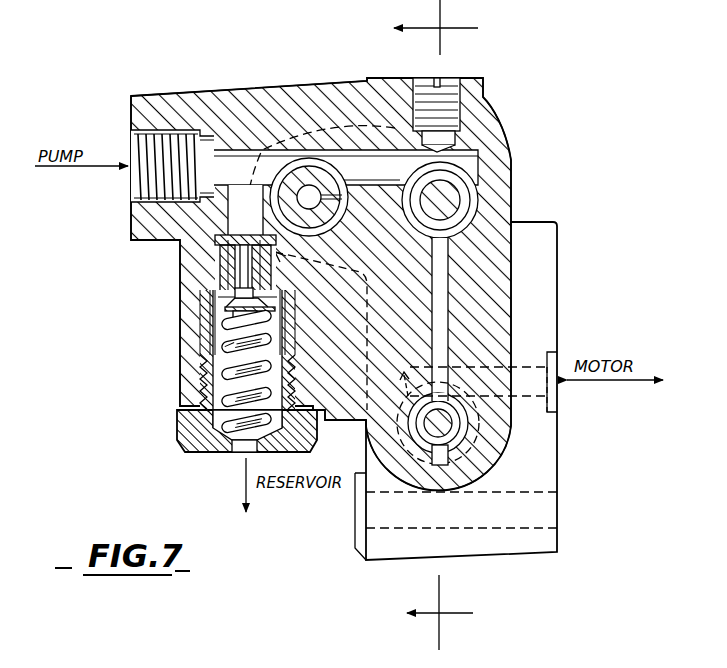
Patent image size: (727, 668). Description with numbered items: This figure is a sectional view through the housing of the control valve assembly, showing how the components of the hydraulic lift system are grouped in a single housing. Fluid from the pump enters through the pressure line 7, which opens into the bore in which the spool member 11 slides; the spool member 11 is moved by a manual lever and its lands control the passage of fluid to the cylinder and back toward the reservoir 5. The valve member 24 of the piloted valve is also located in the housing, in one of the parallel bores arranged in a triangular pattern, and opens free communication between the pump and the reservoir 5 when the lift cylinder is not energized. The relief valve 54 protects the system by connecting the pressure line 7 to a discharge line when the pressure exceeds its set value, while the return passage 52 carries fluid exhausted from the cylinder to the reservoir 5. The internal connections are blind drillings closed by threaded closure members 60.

The pressure line 7 is at (362, 167).
The valve member 24 is at (300, 178).
The spool member 11 is at (448, 205).
The threaded closure member 60 is at (440, 102).
The return passage 52 is at (437, 318).
The relief valve 54 is at (237, 307).
The reservoir 5 is at (431, 325).